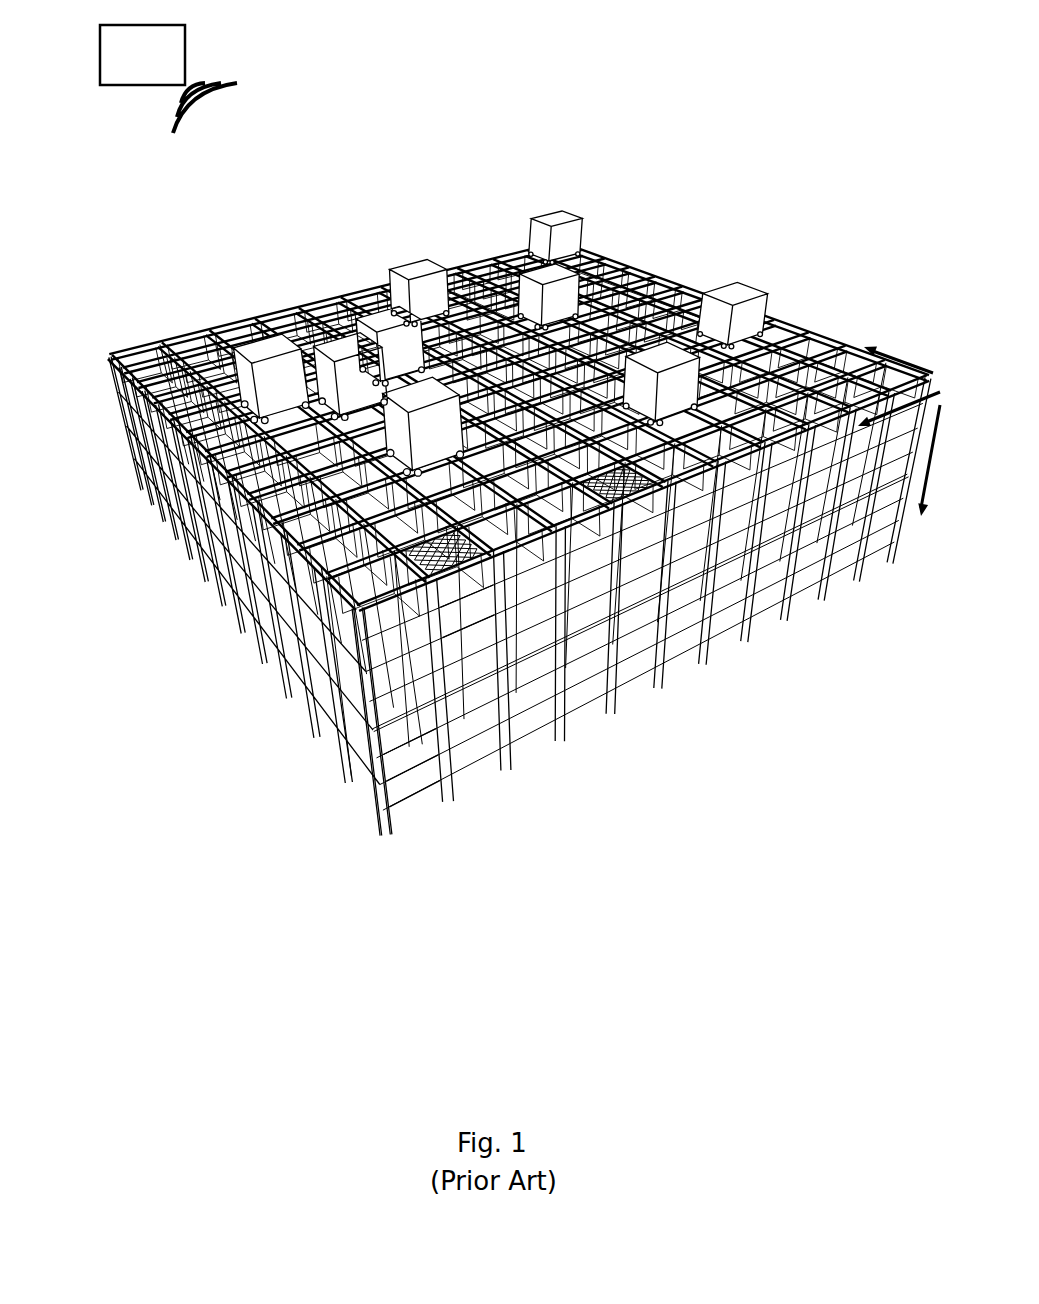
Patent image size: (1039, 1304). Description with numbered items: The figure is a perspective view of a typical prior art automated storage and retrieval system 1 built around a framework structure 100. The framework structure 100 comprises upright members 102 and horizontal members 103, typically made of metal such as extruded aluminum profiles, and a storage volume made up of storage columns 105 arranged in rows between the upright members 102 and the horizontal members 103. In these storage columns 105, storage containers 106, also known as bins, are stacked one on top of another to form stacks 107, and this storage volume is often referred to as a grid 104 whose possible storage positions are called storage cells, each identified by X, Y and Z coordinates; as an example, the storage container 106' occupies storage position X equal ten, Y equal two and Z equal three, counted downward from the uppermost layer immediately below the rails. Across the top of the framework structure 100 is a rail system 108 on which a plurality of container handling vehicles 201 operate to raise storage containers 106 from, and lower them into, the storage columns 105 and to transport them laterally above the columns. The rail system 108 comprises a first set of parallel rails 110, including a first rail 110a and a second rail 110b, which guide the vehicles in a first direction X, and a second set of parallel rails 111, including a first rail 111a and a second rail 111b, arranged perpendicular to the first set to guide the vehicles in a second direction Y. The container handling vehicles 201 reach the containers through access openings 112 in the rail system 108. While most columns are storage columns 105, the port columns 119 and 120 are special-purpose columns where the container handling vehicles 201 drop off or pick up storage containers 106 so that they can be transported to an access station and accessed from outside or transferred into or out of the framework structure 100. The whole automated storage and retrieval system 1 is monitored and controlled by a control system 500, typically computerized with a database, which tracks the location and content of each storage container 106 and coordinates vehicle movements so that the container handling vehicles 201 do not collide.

The automated storage and retrieval system 1 is at (459, 154).
The framework structure 100 is at (118, 519).
The upright members 102 is at (372, 718).
The horizontal members 103 is at (720, 567).
The storage grid 104 is at (93, 360).
The storage column 105 is at (283, 622).
The storage container 106 is at (508, 830).
The particular position of storage container 106' is at (525, 715).
The stack 107 is at (803, 603).
The rail system 108 is at (853, 347).
The parallel rails in first direction 110 is at (800, 375).
The first rail in first direction 110a is at (250, 347).
The second rail in first direction 110b is at (257, 337).
The parallel rails in second direction 111 is at (363, 303).
The first rail of second direction 111a is at (217, 353).
The second rail of second direction 111b is at (268, 330).
The access opening 112 is at (755, 357).
The first port column 119 is at (457, 567).
The second port column 120 is at (633, 492).
The container handling vehicle 201 is at (572, 236).
The control system 500 is at (168, 79).